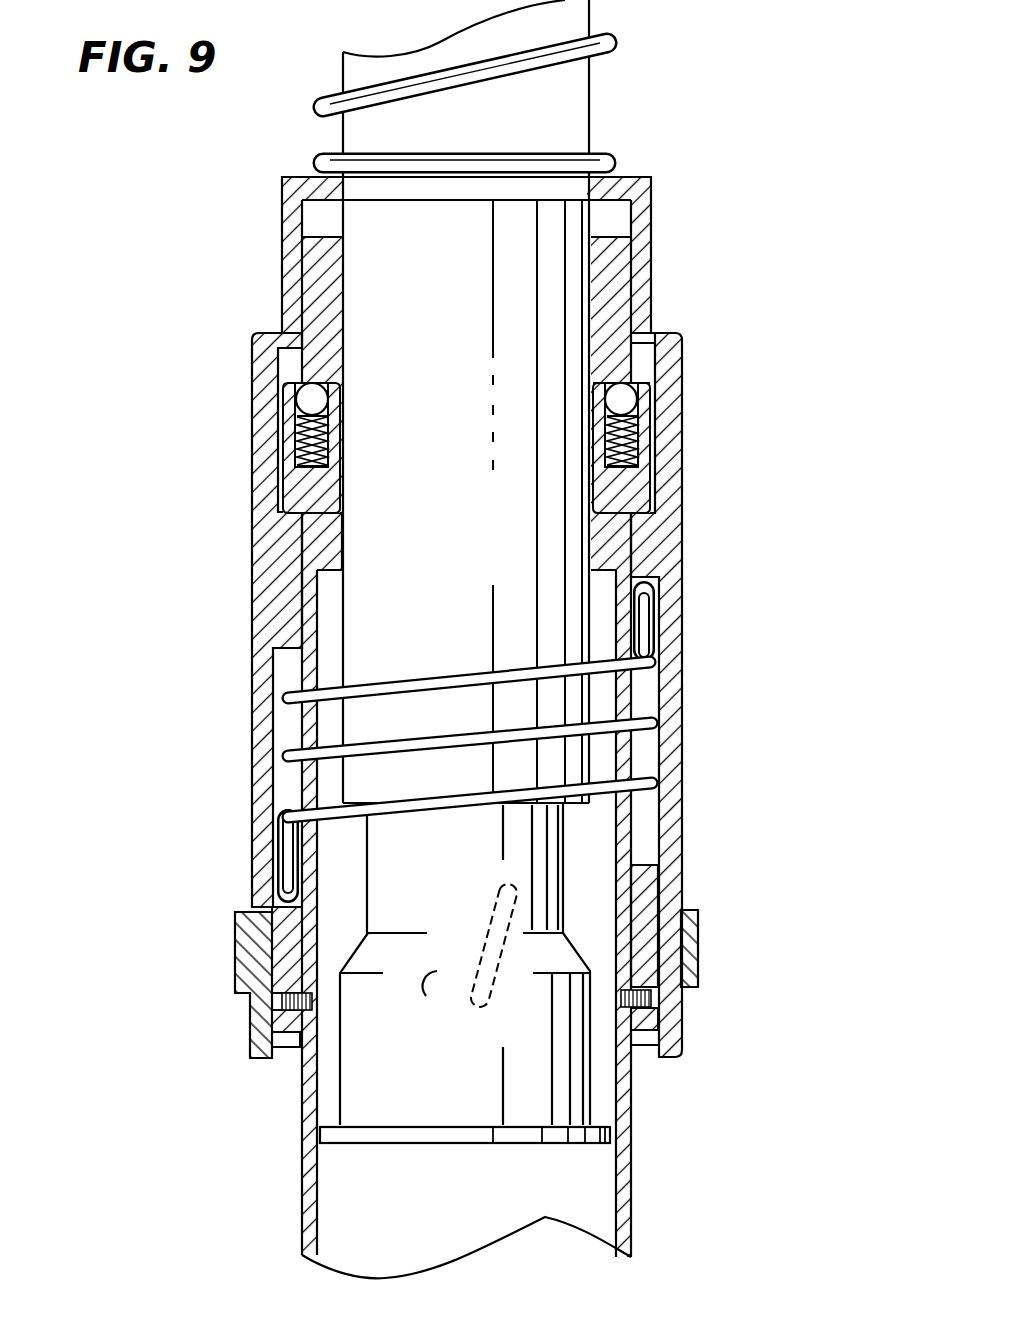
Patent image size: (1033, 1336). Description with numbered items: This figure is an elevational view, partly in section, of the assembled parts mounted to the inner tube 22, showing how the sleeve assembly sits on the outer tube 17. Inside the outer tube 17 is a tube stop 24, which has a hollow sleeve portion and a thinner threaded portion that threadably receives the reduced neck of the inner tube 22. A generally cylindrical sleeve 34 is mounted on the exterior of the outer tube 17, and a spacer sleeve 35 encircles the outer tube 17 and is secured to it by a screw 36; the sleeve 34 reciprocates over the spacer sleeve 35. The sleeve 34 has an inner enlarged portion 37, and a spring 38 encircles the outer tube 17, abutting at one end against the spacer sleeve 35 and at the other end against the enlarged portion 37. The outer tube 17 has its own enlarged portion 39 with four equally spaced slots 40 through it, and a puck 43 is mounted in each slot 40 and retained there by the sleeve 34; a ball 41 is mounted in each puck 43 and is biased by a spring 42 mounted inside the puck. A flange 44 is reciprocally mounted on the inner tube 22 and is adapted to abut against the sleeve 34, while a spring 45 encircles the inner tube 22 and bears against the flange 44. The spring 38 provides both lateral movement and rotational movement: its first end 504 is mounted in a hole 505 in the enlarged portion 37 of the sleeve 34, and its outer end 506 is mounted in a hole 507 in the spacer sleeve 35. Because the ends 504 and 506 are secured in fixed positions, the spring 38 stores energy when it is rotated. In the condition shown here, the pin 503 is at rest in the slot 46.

The outer tube 17 is at (634, 1186).
The inner tube 22 is at (560, 527).
The tube stop 24 is at (390, 1145).
The sleeve 34 is at (684, 692).
The spacer sleeve 35 is at (648, 893).
The screw 36 is at (280, 1000).
The enlarged portion 37 is at (280, 622).
The spring 38 is at (468, 731).
The enlarged portion 39 is at (327, 547).
The slot 40 is at (600, 378).
The ball 41 is at (630, 398).
The spring 42 is at (632, 445).
The puck 43 is at (636, 486).
The flange 44 is at (651, 250).
The spring 45 is at (616, 52).
The slot 46 is at (423, 1000).
The pin 503 is at (476, 1002).
The first end 504 is at (653, 613).
The hole 505 is at (632, 588).
The outer end 506 is at (287, 880).
The hole 507 is at (276, 902).